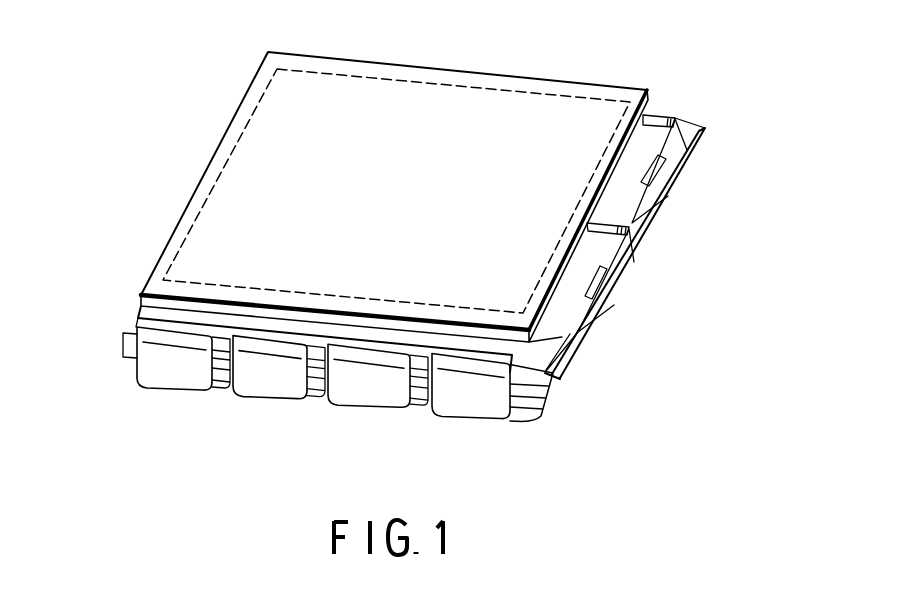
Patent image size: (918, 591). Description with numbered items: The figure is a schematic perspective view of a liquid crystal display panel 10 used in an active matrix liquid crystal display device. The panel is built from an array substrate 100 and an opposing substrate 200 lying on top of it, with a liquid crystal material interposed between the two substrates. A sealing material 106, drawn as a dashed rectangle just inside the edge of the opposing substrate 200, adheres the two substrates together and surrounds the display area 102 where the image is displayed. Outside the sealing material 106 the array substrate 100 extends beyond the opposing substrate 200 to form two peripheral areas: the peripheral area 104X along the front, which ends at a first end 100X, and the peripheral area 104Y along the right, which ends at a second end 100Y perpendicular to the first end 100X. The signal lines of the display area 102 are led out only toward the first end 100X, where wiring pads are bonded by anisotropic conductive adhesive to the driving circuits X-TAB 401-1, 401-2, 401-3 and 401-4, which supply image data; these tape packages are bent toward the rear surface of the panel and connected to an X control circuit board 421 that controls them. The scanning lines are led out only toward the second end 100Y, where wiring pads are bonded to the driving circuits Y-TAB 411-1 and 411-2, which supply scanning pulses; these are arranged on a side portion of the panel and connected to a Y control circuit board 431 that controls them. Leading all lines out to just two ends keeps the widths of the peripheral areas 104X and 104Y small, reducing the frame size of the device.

The liquid crystal display panel 10 is at (447, 190).
The array substrate 100 is at (663, 112).
The first end 100X is at (547, 393).
The second end 100Y is at (578, 377).
The display area 102 is at (507, 120).
The peripheral area 104X is at (128, 334).
The peripheral area 104Y is at (680, 113).
The sealing material 106 is at (348, 73).
The opposing substrate 200 is at (633, 80).
The driving circuit X-TAB 401-1 is at (476, 404).
The driving circuit X-TAB 401-2 is at (372, 402).
The driving circuit X-TAB 401-3 is at (265, 392).
The driving circuit X-TAB 401-4 is at (175, 383).
The driving circuit Y-TAB 411-1 is at (617, 282).
The driving circuit Y-TAB 411-2 is at (672, 170).
The X control circuit board 421 is at (527, 425).
The Y control circuit board 431 is at (585, 347).